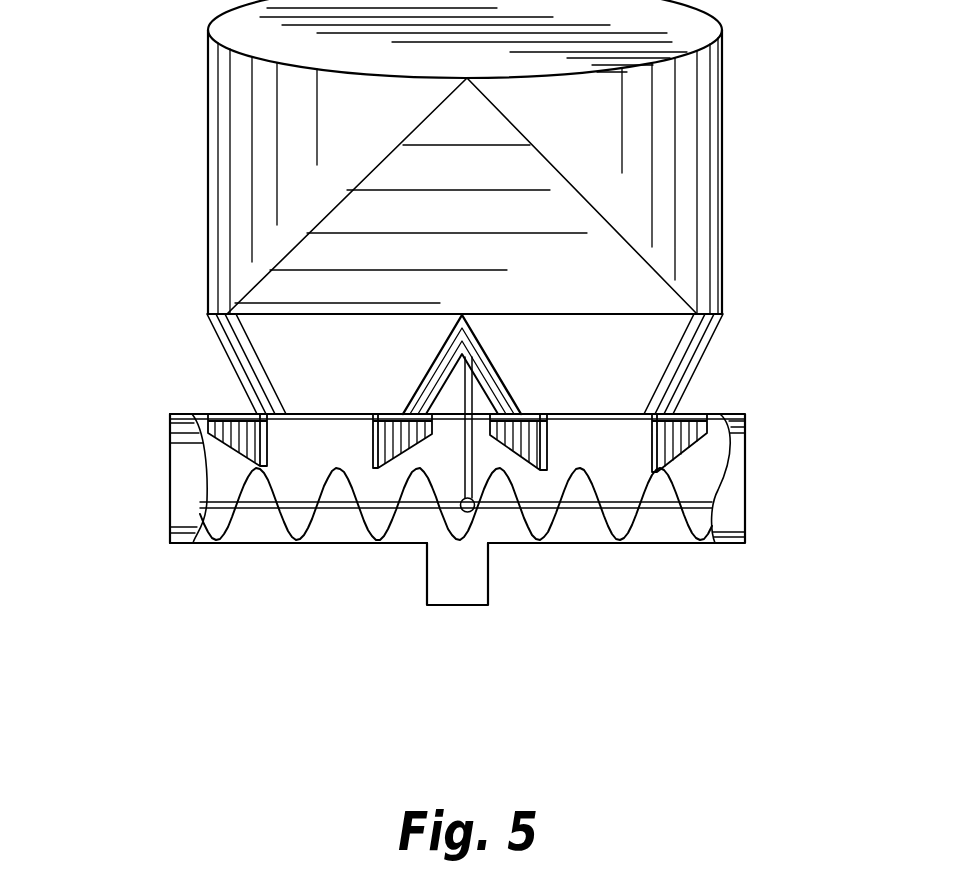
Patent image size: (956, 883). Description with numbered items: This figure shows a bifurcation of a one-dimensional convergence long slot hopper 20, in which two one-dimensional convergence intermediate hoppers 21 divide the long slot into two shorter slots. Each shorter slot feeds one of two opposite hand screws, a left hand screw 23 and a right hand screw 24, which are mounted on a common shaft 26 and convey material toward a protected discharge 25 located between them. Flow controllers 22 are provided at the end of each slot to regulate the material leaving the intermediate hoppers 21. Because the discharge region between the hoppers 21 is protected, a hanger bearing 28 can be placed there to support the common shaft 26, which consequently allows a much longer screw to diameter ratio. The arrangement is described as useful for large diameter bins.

The long slot hopper 20 is at (490, 181).
The intermediate hoppers 21 is at (287, 367).
The flow controllers 22 is at (235, 418).
The left hand screw 23 is at (663, 515).
The right hand screw 24 is at (302, 513).
The protected discharge 25 is at (492, 577).
The common shaft 26 is at (480, 477).
The hanger bearing 28 is at (480, 477).